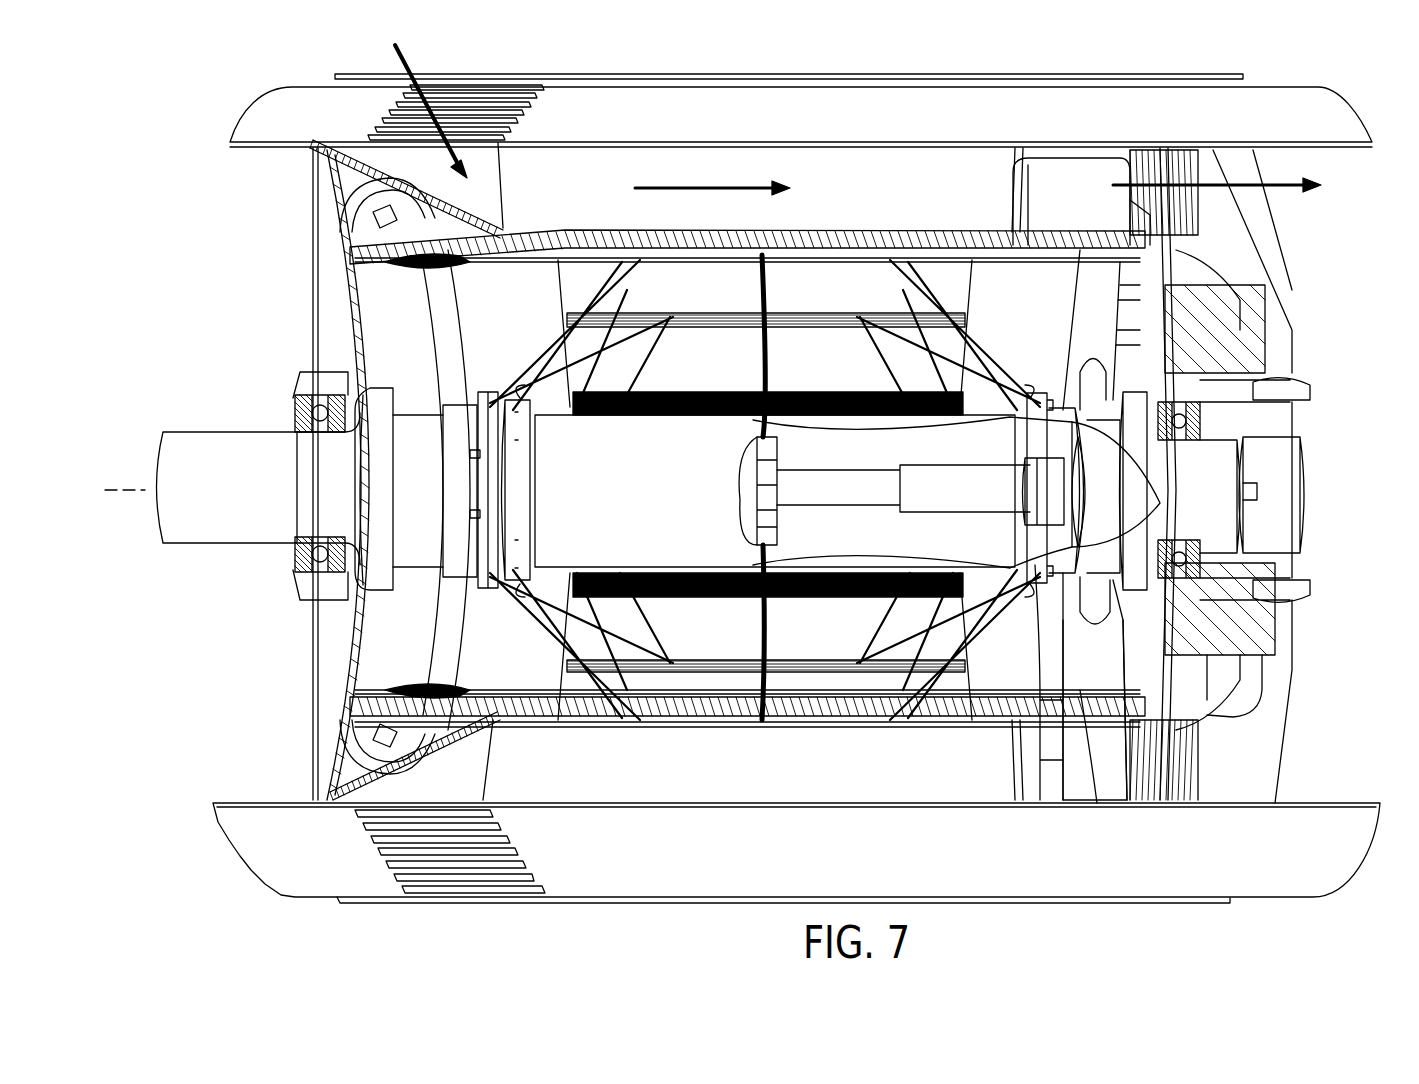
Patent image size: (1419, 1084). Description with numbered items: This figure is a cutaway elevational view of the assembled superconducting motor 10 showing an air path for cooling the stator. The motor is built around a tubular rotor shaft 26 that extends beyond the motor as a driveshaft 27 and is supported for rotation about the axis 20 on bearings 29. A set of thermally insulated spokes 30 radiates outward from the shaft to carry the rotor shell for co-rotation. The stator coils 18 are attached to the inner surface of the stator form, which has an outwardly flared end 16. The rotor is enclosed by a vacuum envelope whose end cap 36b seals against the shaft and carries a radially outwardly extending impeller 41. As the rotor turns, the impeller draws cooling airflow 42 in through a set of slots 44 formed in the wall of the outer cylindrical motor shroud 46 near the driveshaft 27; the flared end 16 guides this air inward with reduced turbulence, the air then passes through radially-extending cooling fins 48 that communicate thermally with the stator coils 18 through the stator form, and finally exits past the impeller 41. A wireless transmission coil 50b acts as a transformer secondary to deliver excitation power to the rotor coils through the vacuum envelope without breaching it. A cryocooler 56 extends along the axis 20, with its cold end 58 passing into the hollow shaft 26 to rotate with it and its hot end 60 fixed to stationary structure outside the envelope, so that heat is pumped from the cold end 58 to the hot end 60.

The superconducting motor 10 is at (185, 146).
The flared end 16 is at (372, 152).
The stator coils 18 is at (1075, 235).
The axis 20 is at (127, 492).
The tubular rotor shaft 26 is at (363, 500).
The driveshaft 27 is at (170, 448).
The bearings 29 is at (308, 387).
The thermally insulated spokes 30 is at (638, 322).
The end cap 36b is at (353, 305).
The impeller 41 is at (1085, 143).
The airflow 42 is at (408, 68).
The slots 44 is at (513, 108).
The outer cylindrical motor shroud 46 is at (678, 88).
The cooling fins 48 is at (860, 168).
The wireless transmission coil 50b is at (1143, 613).
The cryocooler 56 is at (1097, 473).
The cold end 58 is at (760, 460).
The hot end 60 is at (1283, 472).